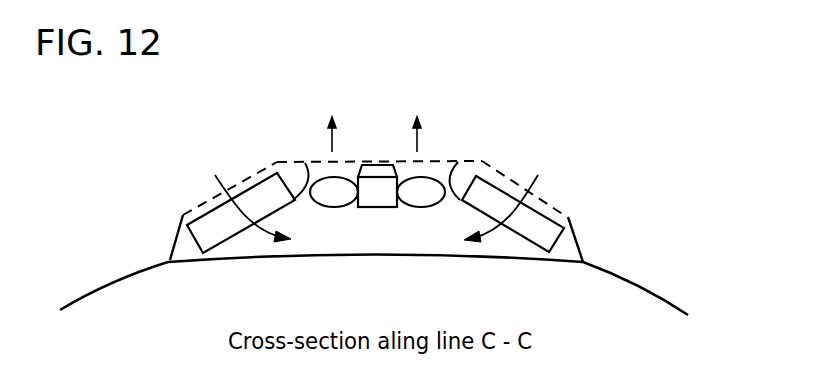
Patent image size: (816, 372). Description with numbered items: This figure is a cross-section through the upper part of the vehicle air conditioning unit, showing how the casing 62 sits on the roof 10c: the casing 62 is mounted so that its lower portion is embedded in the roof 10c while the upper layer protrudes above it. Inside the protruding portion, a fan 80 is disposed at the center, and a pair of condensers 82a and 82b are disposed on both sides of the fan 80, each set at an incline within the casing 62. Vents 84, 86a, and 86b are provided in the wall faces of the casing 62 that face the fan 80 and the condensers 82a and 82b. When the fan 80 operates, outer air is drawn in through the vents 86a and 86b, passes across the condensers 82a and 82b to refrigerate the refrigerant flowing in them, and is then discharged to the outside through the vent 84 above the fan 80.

The roof 10c is at (678, 273).
The casing 62 is at (577, 223).
The fan 80 is at (418, 187).
The condenser 82a is at (551, 203).
The condenser 82b is at (258, 182).
The vent 84 is at (378, 163).
The vent 86a is at (508, 178).
The vent 86b is at (199, 203).